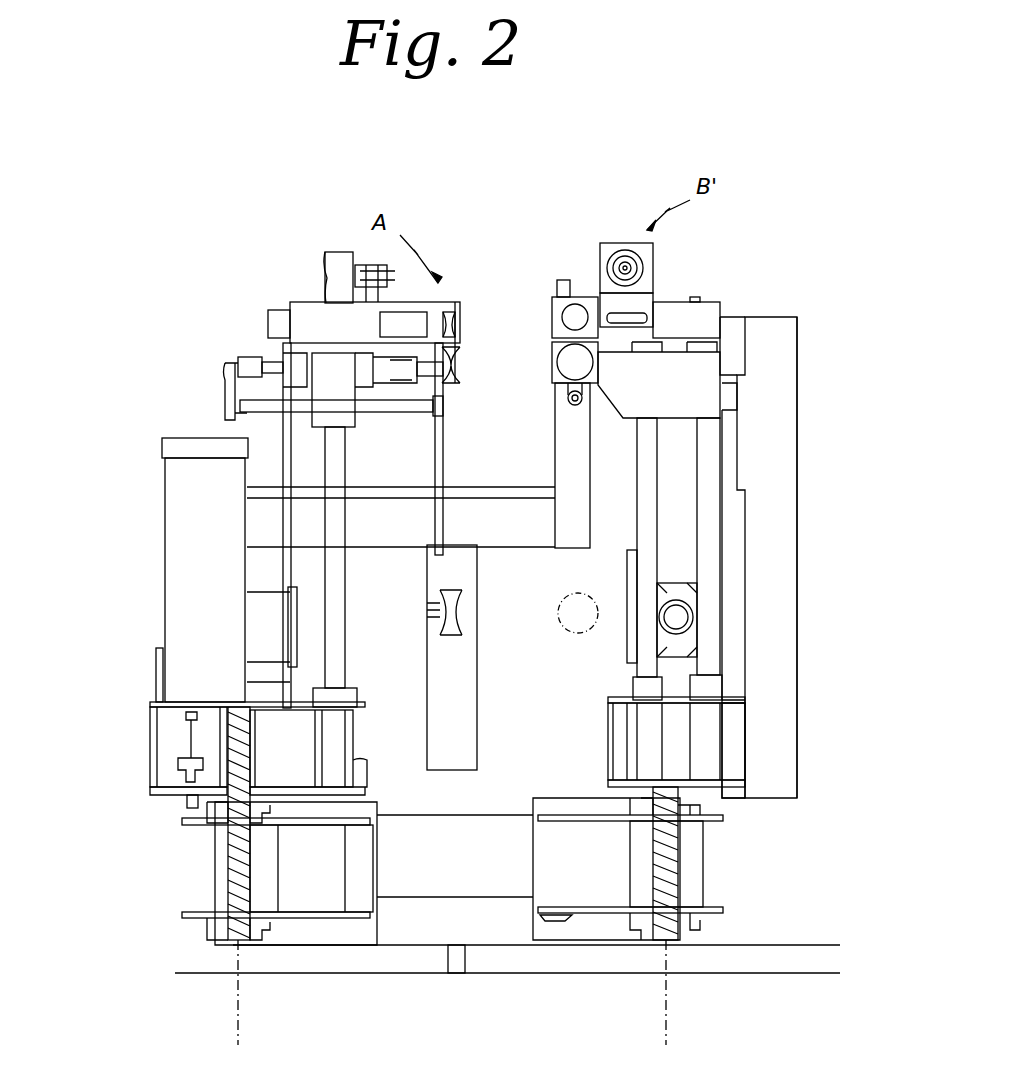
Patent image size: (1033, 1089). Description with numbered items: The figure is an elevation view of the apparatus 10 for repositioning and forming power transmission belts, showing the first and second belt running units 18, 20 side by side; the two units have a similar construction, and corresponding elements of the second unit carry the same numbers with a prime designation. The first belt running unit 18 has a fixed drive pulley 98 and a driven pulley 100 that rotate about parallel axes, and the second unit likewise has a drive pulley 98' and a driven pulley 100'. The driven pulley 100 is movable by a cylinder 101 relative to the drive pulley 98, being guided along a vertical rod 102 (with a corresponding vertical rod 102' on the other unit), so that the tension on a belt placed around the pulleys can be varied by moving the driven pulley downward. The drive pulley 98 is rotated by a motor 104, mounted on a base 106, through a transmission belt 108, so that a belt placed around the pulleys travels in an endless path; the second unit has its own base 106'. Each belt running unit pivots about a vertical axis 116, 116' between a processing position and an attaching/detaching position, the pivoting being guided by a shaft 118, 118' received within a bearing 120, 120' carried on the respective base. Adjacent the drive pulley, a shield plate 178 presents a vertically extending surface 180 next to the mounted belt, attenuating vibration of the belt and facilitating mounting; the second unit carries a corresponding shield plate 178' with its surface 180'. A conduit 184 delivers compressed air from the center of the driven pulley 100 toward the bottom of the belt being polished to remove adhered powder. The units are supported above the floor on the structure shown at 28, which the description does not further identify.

The apparatus 10 is at (816, 293).
The first belt running unit 18 is at (140, 672).
The second belt running unit 20 is at (806, 712).
The base 28 is at (493, 945).
The drive pulley 98 is at (377, 298).
The drive pulley 98' is at (636, 285).
The driven pulley 100 is at (412, 558).
The driven pulley 100' is at (544, 360).
The cylinder 101 is at (788, 508).
The vertical rod 102 is at (367, 567).
The vertical rod 102' is at (625, 559).
The motor 104 is at (257, 615).
The base 106 is at (308, 751).
The base 106' is at (742, 719).
The transmission belt 108 is at (285, 437).
The vertical axis 116 is at (287, 992).
The vertical axis 116' is at (717, 992).
The shaft 118 is at (175, 823).
The shaft 118' is at (730, 863).
The bearing 120 is at (316, 874).
The bearing 120' is at (684, 869).
The shield plate 178 is at (488, 449).
The shield plate 178' is at (637, 467).
The vertically extending surface 180 is at (401, 584).
The vertically extending surface 180' is at (538, 576).
The conduit 184 is at (262, 362).